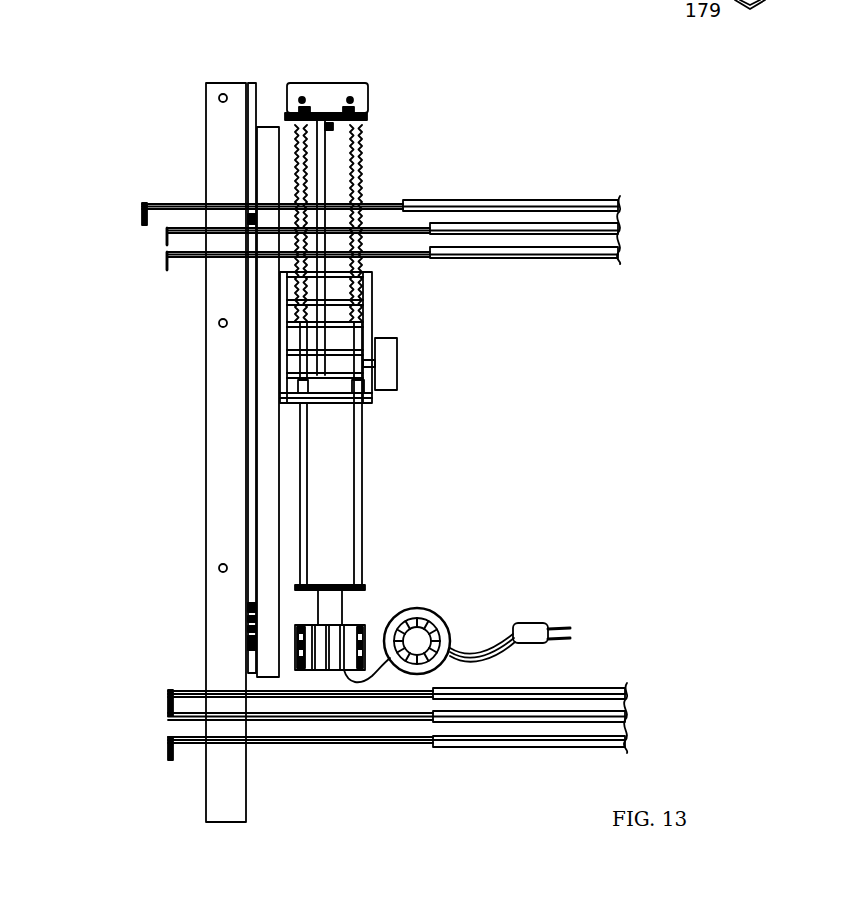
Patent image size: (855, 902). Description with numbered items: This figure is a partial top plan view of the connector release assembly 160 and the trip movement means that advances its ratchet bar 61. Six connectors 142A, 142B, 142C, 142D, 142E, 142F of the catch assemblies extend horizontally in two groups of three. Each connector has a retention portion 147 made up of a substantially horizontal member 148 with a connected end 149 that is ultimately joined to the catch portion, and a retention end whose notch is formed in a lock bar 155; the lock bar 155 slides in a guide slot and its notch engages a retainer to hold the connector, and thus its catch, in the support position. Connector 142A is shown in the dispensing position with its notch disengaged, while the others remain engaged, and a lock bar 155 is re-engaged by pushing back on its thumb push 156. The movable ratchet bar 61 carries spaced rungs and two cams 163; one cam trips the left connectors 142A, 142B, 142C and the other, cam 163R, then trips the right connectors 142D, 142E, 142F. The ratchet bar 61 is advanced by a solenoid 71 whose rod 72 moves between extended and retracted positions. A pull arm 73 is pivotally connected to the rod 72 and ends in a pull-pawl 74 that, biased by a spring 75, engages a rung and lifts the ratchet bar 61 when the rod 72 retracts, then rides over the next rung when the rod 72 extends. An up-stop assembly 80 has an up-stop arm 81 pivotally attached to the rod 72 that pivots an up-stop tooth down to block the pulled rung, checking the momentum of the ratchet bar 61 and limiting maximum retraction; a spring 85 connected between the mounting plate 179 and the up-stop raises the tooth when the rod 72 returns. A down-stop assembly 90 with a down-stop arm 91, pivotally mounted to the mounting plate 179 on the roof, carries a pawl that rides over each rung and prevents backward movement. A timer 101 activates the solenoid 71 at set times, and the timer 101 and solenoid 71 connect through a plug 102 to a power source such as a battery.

The ratchet bar 61 is at (268, 127).
The solenoid 71 is at (350, 626).
The rod 72 is at (338, 596).
The pull arm 73 is at (302, 433).
The pull-pawl 74 is at (294, 360).
The spring 75 is at (296, 175).
The up-stop assembly 80 is at (398, 351).
The up-stop arm 81 is at (363, 461).
The spring 85 is at (360, 146).
The down-stop assembly 90 is at (324, 347).
The down-stop arm 91 is at (327, 169).
The timer 101 is at (418, 609).
The plug 102 is at (531, 623).
The connector 142A is at (622, 207).
The connector 142B is at (622, 232).
The connector 142C is at (622, 258).
The connector 142D is at (628, 693).
The connector 142E is at (628, 716).
The connector 142F is at (628, 741).
The retention portion 147 is at (153, 204).
The horizontal member 148 is at (472, 254).
The connected end 149 is at (556, 254).
The lock bar 155 is at (142, 213).
The thumb push 156 is at (168, 726).
The connector release assembly 160 is at (211, 84).
The cam 163 is at (247, 219).
The right cam 163R is at (248, 614).
The mounting plate 179 is at (310, 83).